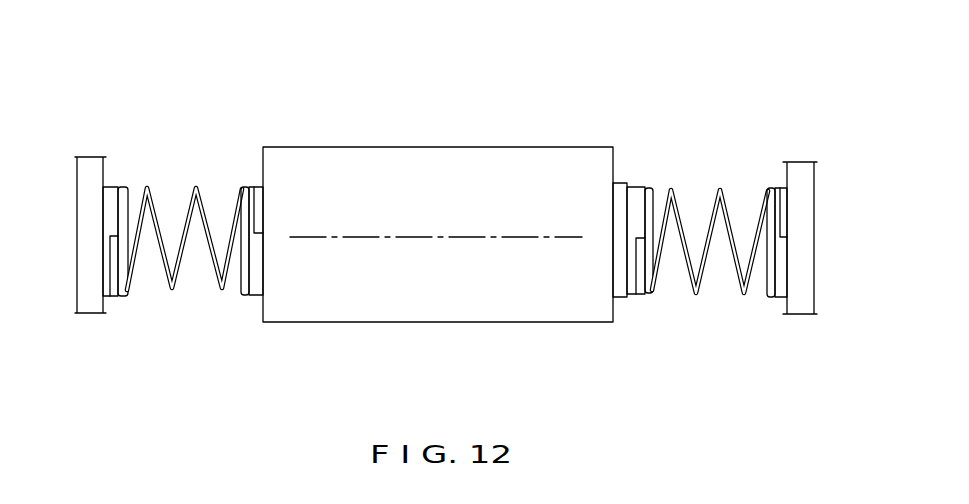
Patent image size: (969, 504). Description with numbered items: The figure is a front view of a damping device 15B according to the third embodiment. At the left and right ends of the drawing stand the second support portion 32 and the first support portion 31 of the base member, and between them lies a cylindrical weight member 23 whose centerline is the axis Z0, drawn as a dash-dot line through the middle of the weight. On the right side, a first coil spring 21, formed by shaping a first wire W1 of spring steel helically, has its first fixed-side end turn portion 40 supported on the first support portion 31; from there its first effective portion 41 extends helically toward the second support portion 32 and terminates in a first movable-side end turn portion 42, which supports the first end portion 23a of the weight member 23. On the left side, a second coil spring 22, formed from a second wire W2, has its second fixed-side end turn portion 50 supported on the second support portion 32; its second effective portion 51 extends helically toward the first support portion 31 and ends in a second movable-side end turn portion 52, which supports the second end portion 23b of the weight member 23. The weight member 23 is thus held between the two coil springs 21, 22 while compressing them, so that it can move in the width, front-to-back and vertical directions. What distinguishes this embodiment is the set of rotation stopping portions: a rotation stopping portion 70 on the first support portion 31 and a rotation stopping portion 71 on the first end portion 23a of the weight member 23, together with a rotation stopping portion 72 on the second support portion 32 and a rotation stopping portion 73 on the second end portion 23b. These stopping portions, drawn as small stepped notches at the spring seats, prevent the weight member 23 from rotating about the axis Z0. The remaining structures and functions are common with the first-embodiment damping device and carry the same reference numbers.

The damping device 15B is at (572, 93).
The first coil spring 21 is at (712, 210).
The second coil spring 22 is at (190, 210).
The weight member 23 is at (430, 312).
The first end portion 23a is at (613, 303).
The second end portion 23b is at (260, 303).
The first support portion 31 is at (798, 307).
The second support portion 32 is at (88, 307).
The first fixed-side end turn portion 40 is at (778, 213).
The first effective portion 41 is at (732, 218).
The first movable-side end turn portion 42 is at (640, 268).
The second fixed-side end turn portion 50 is at (113, 272).
The second effective portion 51 is at (157, 200).
The second movable-side end turn portion 52 is at (252, 217).
The rotation stopping portion 70 is at (780, 230).
The rotation stopping portion 71 is at (637, 247).
The rotation stopping portion 72 is at (113, 245).
The rotation stopping portion 73 is at (254, 231).
The axis Z0 is at (408, 235).
The first wire W1 is at (742, 282).
The second wire W2 is at (217, 282).